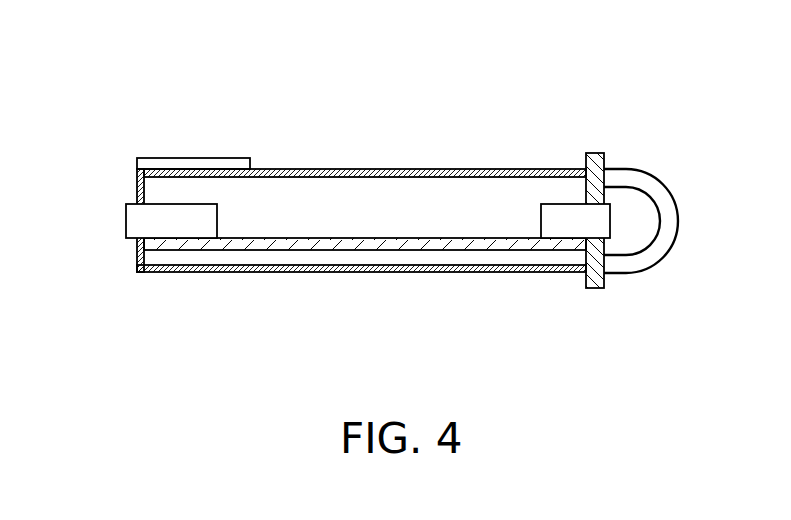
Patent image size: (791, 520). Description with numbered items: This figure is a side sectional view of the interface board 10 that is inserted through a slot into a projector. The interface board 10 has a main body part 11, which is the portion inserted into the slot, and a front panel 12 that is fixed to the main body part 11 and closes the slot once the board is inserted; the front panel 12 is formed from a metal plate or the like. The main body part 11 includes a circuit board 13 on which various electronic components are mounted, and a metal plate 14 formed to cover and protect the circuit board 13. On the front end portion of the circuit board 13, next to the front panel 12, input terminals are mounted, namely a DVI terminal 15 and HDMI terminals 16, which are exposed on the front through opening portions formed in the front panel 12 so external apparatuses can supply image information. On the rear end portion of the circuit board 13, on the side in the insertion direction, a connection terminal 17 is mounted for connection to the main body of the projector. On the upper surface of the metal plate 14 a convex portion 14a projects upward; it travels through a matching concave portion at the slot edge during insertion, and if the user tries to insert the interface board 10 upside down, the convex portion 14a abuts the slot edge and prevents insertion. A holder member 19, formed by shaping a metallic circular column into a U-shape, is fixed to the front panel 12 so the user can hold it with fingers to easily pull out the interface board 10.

The interface board 10 is at (650, 88).
The main body part 11 is at (515, 275).
The front panel 12 is at (590, 289).
The circuit board 13 is at (401, 247).
The metal plate 14 is at (336, 170).
The convex portion 14a is at (203, 158).
The DVI terminal 15 is at (571, 169).
The HDMI terminal 16 is at (552, 208).
The connection terminal 17 is at (130, 220).
The holder member 19 is at (677, 212).